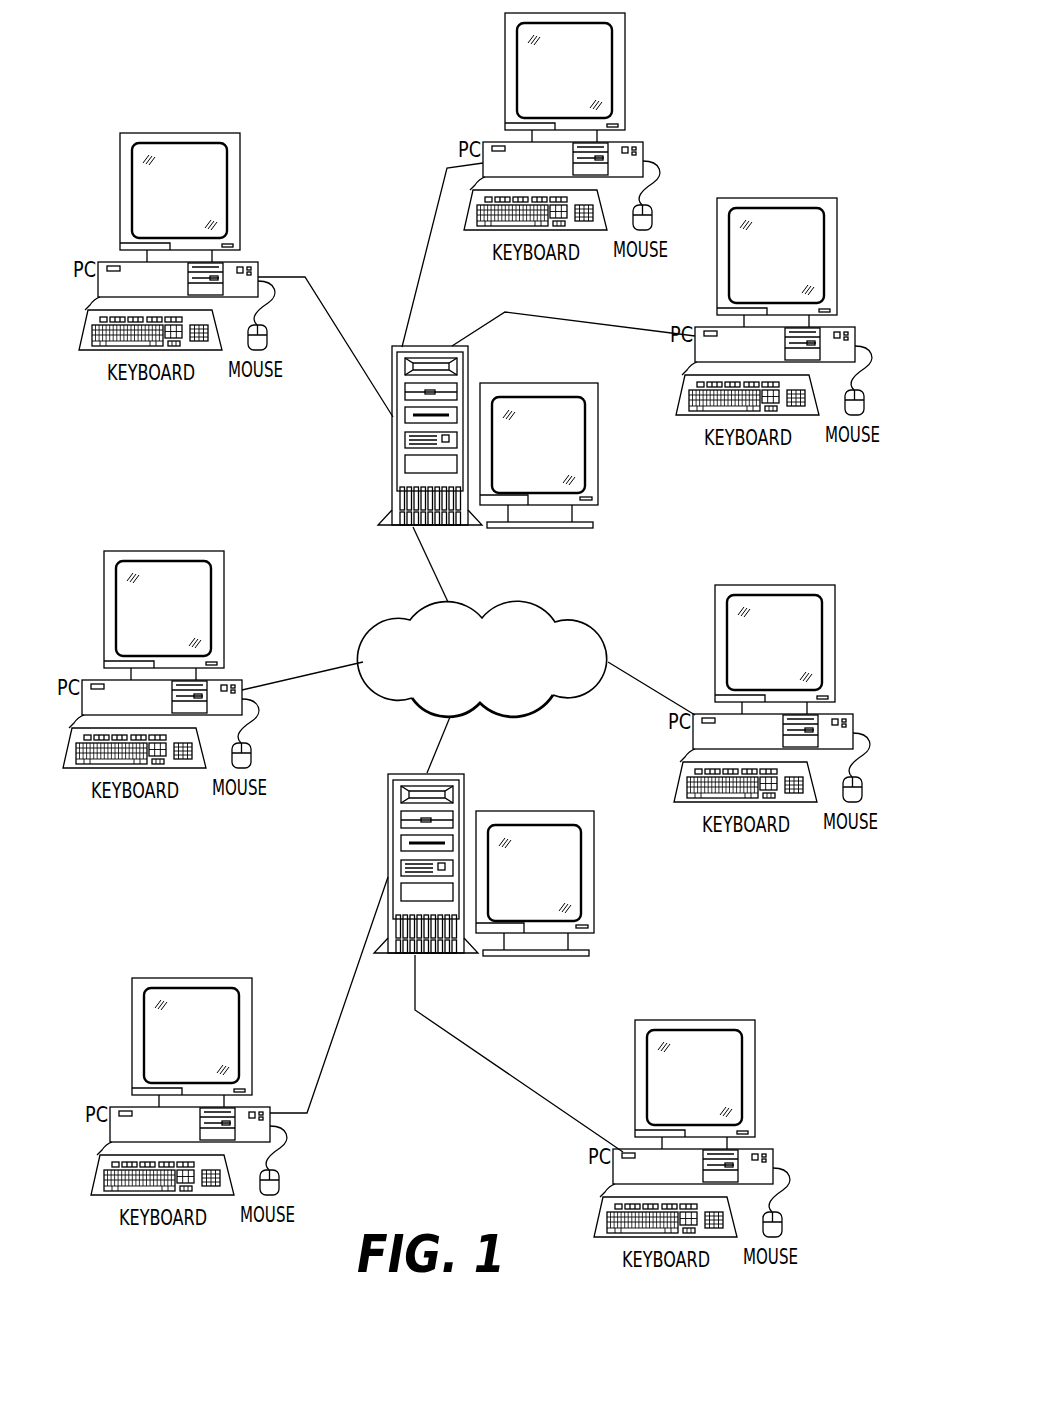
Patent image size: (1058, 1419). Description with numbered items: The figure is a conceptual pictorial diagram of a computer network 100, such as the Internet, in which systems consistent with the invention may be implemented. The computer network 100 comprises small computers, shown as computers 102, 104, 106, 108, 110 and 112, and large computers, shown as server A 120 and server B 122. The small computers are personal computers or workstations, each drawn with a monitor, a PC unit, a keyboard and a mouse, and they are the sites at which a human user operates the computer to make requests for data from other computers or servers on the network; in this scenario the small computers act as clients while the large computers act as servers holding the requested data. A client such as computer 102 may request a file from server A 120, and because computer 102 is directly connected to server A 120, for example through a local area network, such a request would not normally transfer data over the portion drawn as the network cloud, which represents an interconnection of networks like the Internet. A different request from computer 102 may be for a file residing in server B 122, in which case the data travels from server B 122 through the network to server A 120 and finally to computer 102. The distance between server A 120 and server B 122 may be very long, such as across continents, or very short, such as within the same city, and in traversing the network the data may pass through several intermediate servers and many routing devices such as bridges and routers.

The computer network 100 is at (759, 106).
The computer 102 is at (847, 328).
The computer 104 is at (633, 142).
The computer 106 is at (248, 260).
The computer 108 is at (848, 715).
The computer 110 is at (262, 1107).
The computer 112 is at (765, 1152).
The server A 120 is at (393, 443).
The server B 122 is at (465, 773).